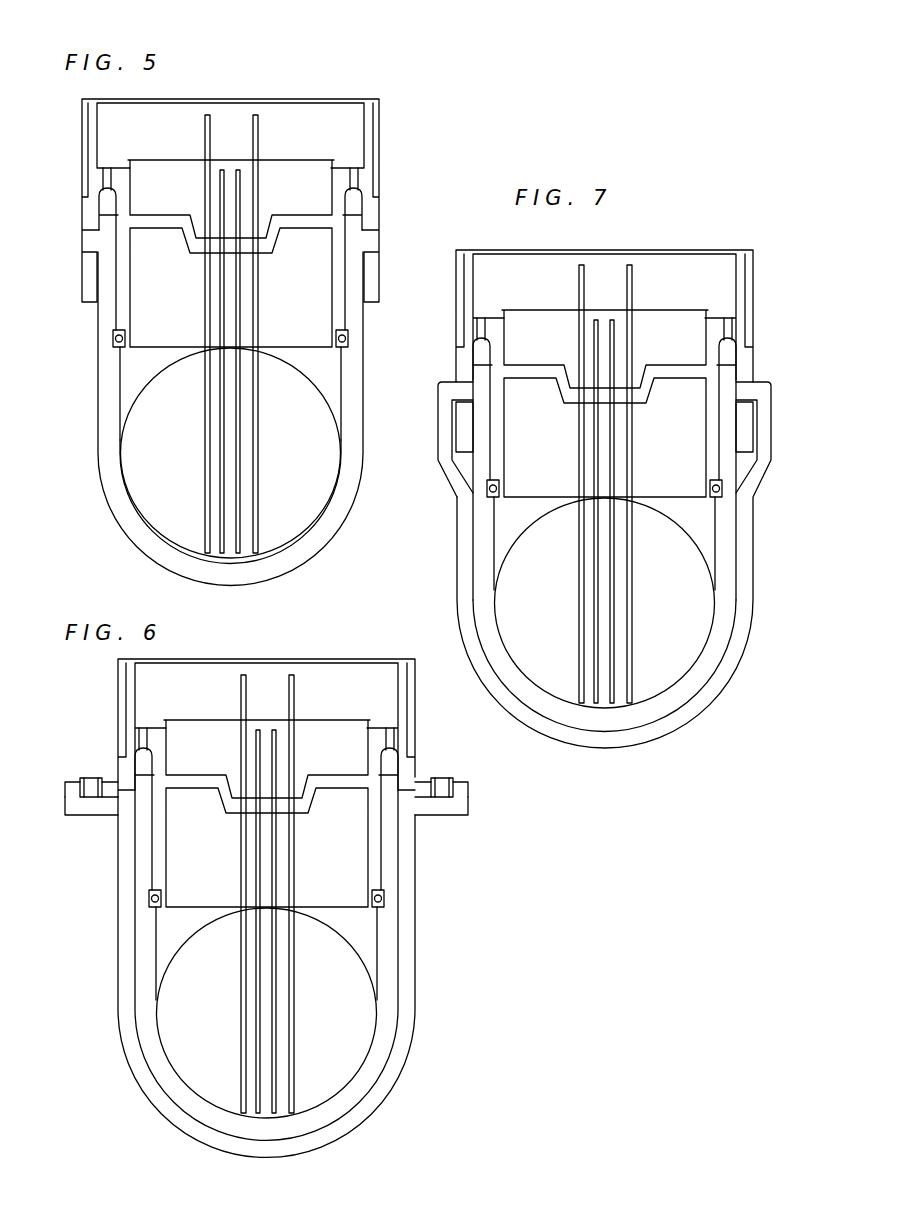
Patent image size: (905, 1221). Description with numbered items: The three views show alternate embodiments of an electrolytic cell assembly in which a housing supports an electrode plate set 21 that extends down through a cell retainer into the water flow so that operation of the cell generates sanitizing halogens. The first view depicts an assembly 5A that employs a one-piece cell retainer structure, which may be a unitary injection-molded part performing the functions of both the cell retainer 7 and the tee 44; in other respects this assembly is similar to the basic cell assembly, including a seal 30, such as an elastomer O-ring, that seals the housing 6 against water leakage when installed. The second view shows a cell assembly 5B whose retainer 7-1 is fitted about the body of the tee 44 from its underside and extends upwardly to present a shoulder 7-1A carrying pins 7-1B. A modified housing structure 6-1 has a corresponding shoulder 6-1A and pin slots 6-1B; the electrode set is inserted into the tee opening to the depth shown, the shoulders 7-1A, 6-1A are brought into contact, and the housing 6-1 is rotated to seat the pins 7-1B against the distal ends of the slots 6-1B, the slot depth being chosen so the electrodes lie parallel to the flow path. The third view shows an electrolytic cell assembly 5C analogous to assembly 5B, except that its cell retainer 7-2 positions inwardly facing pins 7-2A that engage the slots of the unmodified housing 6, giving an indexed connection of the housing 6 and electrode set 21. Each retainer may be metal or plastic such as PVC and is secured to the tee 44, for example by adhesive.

In FIG. 5, the electrolytic cell assembly 5A is at (398, 133).
In FIG. 6, the cell assembly 5B is at (351, 652).
In FIG. 7, the electrolytic cell assembly 5C is at (766, 247).
In FIG. 7, the housing 6 is at (757, 290).
In FIG. 6, the housing structure 6-1 is at (416, 706).
In FIG. 6, the shoulder 6-1A is at (64, 784).
In FIG. 6, the pin slots 6-1B is at (460, 790).
In FIG. 5, the cell retainer 7 is at (110, 508).
In FIG. 6, the retainer 7-1 is at (120, 1001).
In FIG. 6, the shoulder 7-1A is at (79, 816).
In FIG. 6, the pins 7-1B is at (92, 786).
In FIG. 7, the cell retainer 7-2 is at (456, 612).
In FIG. 7, the inwardly facing pins 7-2A is at (459, 392).
In FIG. 5, the electrode plate set 21 is at (262, 458).
In FIG. 6, the electrode plate set 21 is at (301, 1030).
In FIG. 7, the electrode plate set 21 is at (646, 648).
In FIG. 5, the seal 30 is at (350, 338).
In FIG. 6, the seal 30 is at (385, 892).
In FIG. 7, the seal 30 is at (723, 488).
In FIG. 5, the tee 44 is at (231, 453).
In FIG. 6, the tee 44 is at (157, 1068).
In FIG. 7, the tee 44 is at (492, 632).